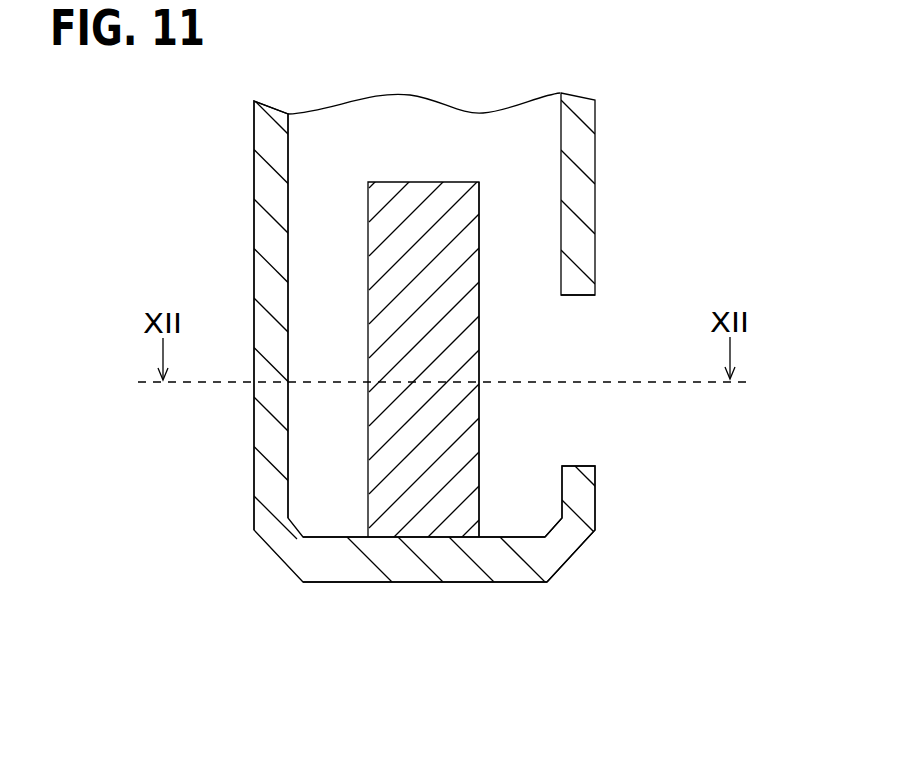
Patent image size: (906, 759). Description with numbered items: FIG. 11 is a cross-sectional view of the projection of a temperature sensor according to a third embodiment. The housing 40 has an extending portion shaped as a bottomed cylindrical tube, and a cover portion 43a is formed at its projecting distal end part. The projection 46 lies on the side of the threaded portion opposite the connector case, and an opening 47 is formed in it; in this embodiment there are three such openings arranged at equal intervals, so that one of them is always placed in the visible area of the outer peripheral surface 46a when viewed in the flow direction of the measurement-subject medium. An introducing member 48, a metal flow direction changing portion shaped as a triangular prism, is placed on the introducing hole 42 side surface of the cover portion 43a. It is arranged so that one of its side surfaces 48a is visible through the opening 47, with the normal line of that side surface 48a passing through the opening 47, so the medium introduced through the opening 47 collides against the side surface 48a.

The housing 40 is at (464, 357).
The introducing hole 42 is at (326, 462).
The cover portion 43a is at (348, 565).
The projection 46 is at (580, 145).
The outer peripheral surface 46a is at (596, 500).
The opening 47 is at (580, 295).
The introducing member 48 is at (435, 513).
The side surface 48a is at (480, 357).